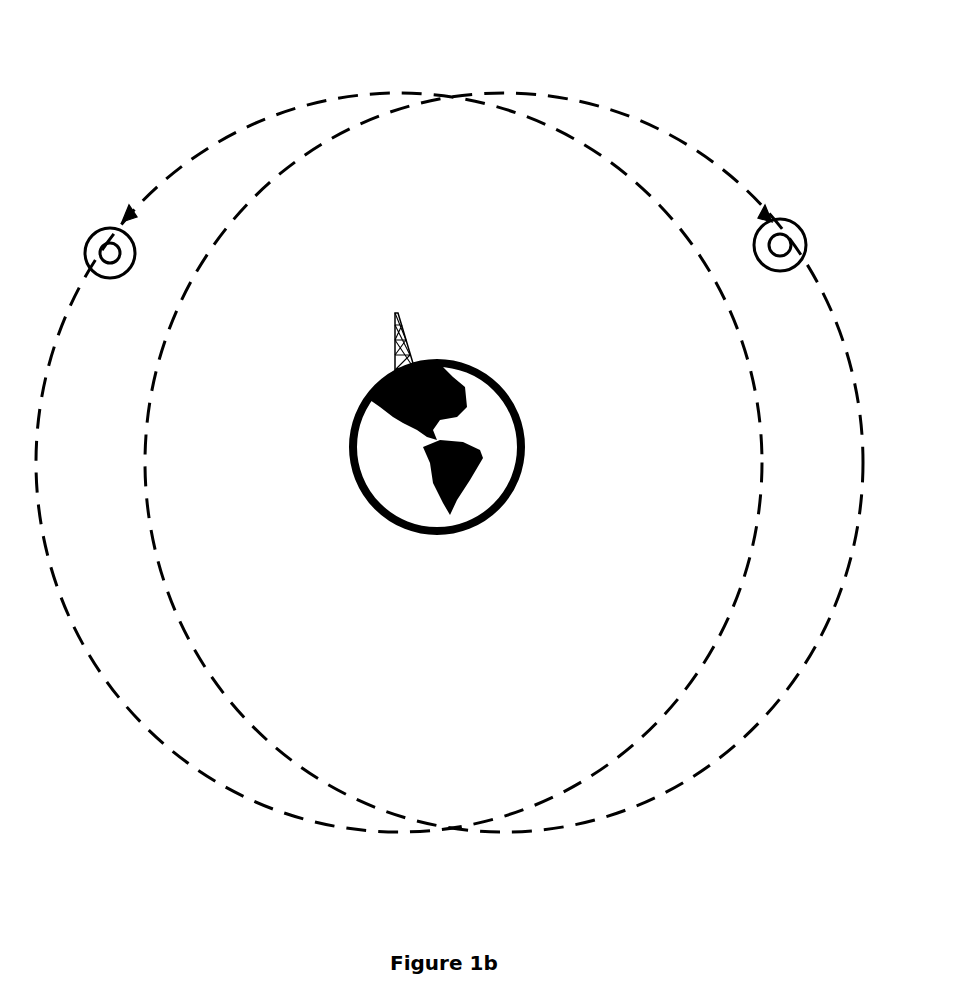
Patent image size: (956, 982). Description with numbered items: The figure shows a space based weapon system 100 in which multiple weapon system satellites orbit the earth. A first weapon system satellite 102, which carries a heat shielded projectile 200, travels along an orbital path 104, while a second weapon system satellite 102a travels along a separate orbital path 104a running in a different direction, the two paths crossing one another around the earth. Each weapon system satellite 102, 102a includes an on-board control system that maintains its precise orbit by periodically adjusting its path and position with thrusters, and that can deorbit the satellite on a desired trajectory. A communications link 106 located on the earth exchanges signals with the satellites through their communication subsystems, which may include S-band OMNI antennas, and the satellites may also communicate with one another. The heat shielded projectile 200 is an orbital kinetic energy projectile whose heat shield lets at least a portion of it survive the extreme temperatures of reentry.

The satellite communication system 100 is at (164, 72).
The weapon system satellite 102 is at (769, 223).
The weapon system satellite 102a is at (85, 268).
The orbital path 104 is at (595, 110).
The orbital path 104a is at (320, 98).
The communications link 106 is at (393, 310).
The heat shielded projectile 200 is at (778, 233).